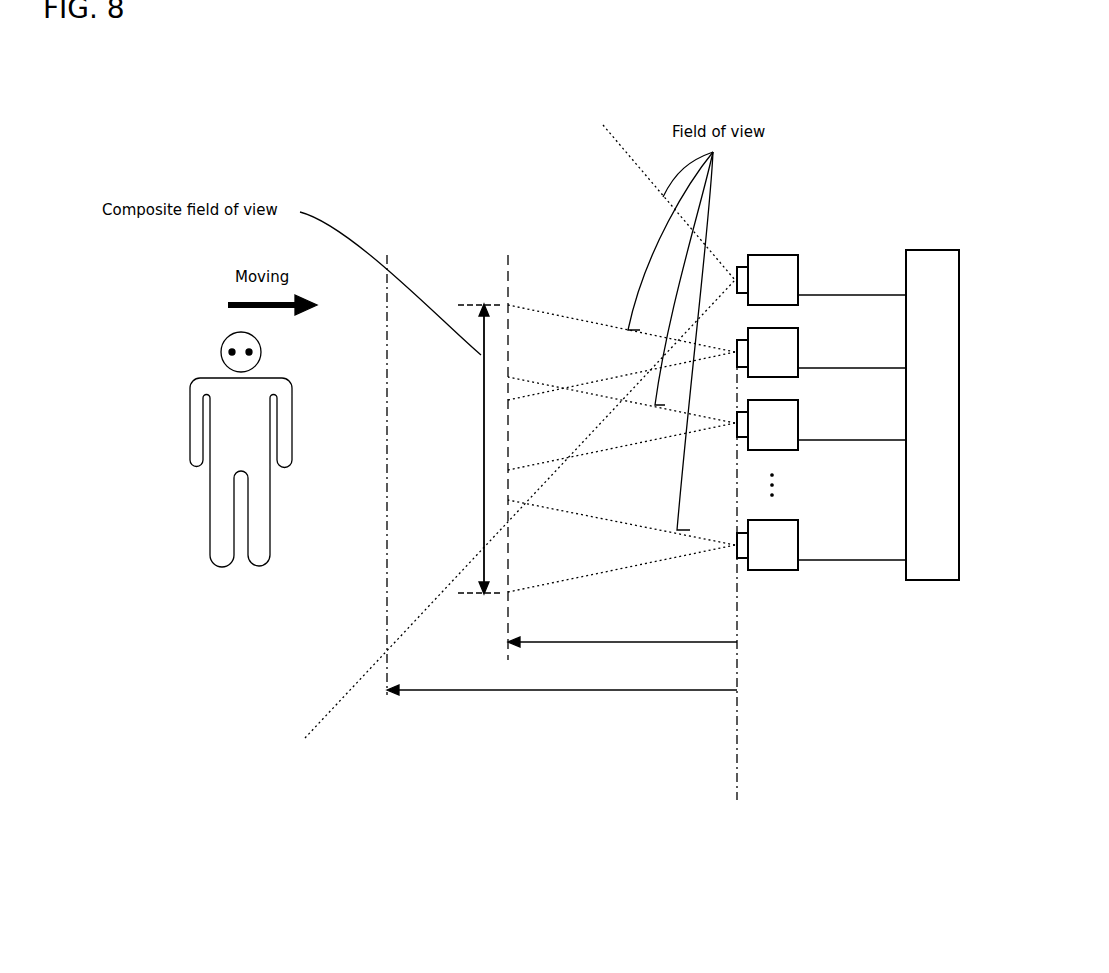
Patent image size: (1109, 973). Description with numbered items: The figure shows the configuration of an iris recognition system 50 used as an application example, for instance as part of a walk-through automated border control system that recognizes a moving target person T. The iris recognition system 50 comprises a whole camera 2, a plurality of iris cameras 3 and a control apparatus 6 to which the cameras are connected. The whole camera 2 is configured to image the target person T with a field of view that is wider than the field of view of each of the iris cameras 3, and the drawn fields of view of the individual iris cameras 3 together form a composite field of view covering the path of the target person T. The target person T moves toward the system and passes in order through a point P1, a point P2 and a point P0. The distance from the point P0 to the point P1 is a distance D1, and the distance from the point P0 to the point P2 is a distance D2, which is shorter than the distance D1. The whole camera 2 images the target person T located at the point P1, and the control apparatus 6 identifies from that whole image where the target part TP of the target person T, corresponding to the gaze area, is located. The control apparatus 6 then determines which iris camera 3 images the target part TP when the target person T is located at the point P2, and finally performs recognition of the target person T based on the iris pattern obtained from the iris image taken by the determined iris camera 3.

The iris recognition system 50 is at (867, 168).
The control apparatus 6 is at (935, 250).
The whole camera 2 is at (798, 277).
The iris cameras 3 is at (845, 547).
The target part TP is at (222, 347).
The target person T is at (222, 567).
The point P0 is at (738, 760).
The point P1 is at (390, 698).
The point P2 is at (510, 657).
The distance D1 is at (562, 684).
The distance D2 is at (622, 635).